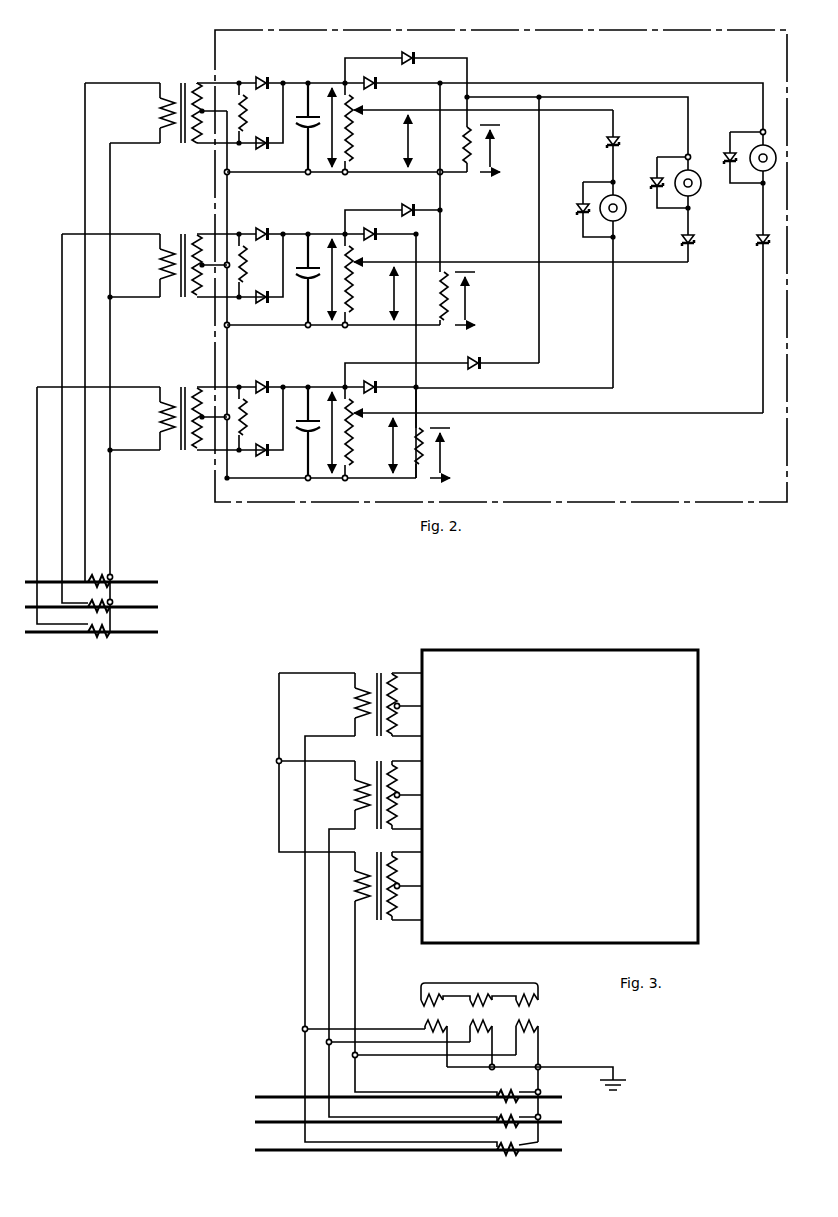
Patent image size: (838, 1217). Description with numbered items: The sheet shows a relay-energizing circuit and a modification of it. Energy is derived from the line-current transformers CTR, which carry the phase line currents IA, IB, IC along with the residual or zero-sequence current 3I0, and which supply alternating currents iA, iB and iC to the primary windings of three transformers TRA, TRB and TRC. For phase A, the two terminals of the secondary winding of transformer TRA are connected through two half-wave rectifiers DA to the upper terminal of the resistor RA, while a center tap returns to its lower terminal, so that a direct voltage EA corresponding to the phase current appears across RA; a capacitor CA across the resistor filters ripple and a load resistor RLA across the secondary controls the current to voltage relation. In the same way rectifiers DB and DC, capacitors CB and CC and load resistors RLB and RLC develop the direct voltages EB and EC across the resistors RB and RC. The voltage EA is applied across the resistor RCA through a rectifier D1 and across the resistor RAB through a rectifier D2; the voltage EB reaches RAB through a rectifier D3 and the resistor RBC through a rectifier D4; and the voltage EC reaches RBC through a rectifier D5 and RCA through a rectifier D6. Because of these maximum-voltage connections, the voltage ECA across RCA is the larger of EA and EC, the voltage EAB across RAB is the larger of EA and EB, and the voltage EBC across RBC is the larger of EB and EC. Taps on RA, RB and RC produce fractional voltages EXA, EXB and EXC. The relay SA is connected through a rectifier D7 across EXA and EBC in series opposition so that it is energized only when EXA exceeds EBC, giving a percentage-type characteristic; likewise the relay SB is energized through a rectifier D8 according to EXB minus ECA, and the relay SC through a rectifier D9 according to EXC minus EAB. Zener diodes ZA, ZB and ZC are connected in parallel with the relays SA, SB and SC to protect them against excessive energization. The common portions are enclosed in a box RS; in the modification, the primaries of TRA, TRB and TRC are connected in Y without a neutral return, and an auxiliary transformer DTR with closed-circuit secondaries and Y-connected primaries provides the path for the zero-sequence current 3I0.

In FIG. 2, the box RS is at (586, 33).
In FIG. 3, the box RS is at (540, 650).
In FIG. 2, the transformer TRA is at (199, 100).
In FIG. 3, the transformer TRA is at (388, 692).
In FIG. 2, the transformer TRB is at (199, 253).
In FIG. 3, the transformer TRB is at (388, 784).
In FIG. 2, the transformer TRC is at (199, 406).
In FIG. 3, the transformer TRC is at (388, 897).
In FIG. 2, the alternating current iA is at (148, 95).
In FIG. 2, the alternating current iB is at (148, 248).
In FIG. 2, the alternating current iC is at (148, 400).
In FIG. 2, the phase A line current IA is at (92, 515).
In FIG. 2, the phase B line current IB is at (68, 530).
In FIG. 2, the phase C line current IC is at (42, 547).
In FIG. 2, the zero-sequence-component of current 3I0 is at (115, 508).
In FIG. 3, the zero-sequence-component of current 3I0 is at (545, 1074).
In FIG. 2, the line-current transformers CTR is at (99, 616).
In FIG. 3, the line-current transformers CTR is at (407, 1124).
In FIG. 3, the auxiliary transformer DTR is at (495, 1062).
In FIG. 2, the half-wave rectifiers DA is at (273, 111).
In FIG. 2, the half-wave rectifiers DB is at (273, 264).
In FIG. 2, the half-wave rectifiers DC is at (273, 417).
In FIG. 2, the load resistor RLA is at (254, 113).
In FIG. 2, the load resistor RLB is at (254, 265).
In FIG. 2, the load resistor RLC is at (254, 418).
In FIG. 2, the capacitor CA is at (303, 127).
In FIG. 2, the capacitor CB is at (303, 279).
In FIG. 2, the capacitor CC is at (302, 432).
In FIG. 2, the direct voltage EA is at (330, 127).
In FIG. 2, the direct voltage EB is at (330, 279).
In FIG. 2, the direct voltage EC is at (330, 432).
In FIG. 2, the resistor RA is at (479, 127).
In FIG. 2, the resistor RB is at (516, 279).
In FIG. 2, the resistor RC is at (554, 432).
In FIG. 2, the tap voltage EXA is at (404, 141).
In FIG. 2, the tap voltage EXB is at (392, 293).
In FIG. 2, the tap voltage EXC is at (390, 445).
In FIG. 2, the rectifier D1 is at (406, 67).
In FIG. 2, the rectifier D2 is at (383, 90).
In FIG. 2, the rectifier D3 is at (392, 209).
In FIG. 2, the rectifier D4 is at (381, 241).
In FIG. 2, the rectifier D5 is at (383, 381).
In FIG. 2, the rectifier D6 is at (442, 372).
In FIG. 2, the rectifier D7 is at (598, 136).
In FIG. 2, the rectifier D8 is at (674, 244).
In FIG. 2, the rectifier D9 is at (751, 244).
In FIG. 2, the resistor RCA is at (470, 149).
In FIG. 2, the resistor RAB is at (461, 313).
In FIG. 2, the resistor RBC is at (415, 446).
In FIG. 2, the maximum voltage ECA is at (493, 148).
In FIG. 2, the maximum voltage EAB is at (467, 298).
In FIG. 2, the maximum voltage EBC is at (443, 453).
In FIG. 2, the Zener diode ZA is at (582, 209).
In FIG. 2, the Zener diode ZB is at (659, 182).
In FIG. 2, the Zener diode ZC is at (737, 157).
In FIG. 2, the relay SA is at (620, 214).
In FIG. 2, the relay SB is at (694, 191).
In FIG. 2, the relay SC is at (757, 175).